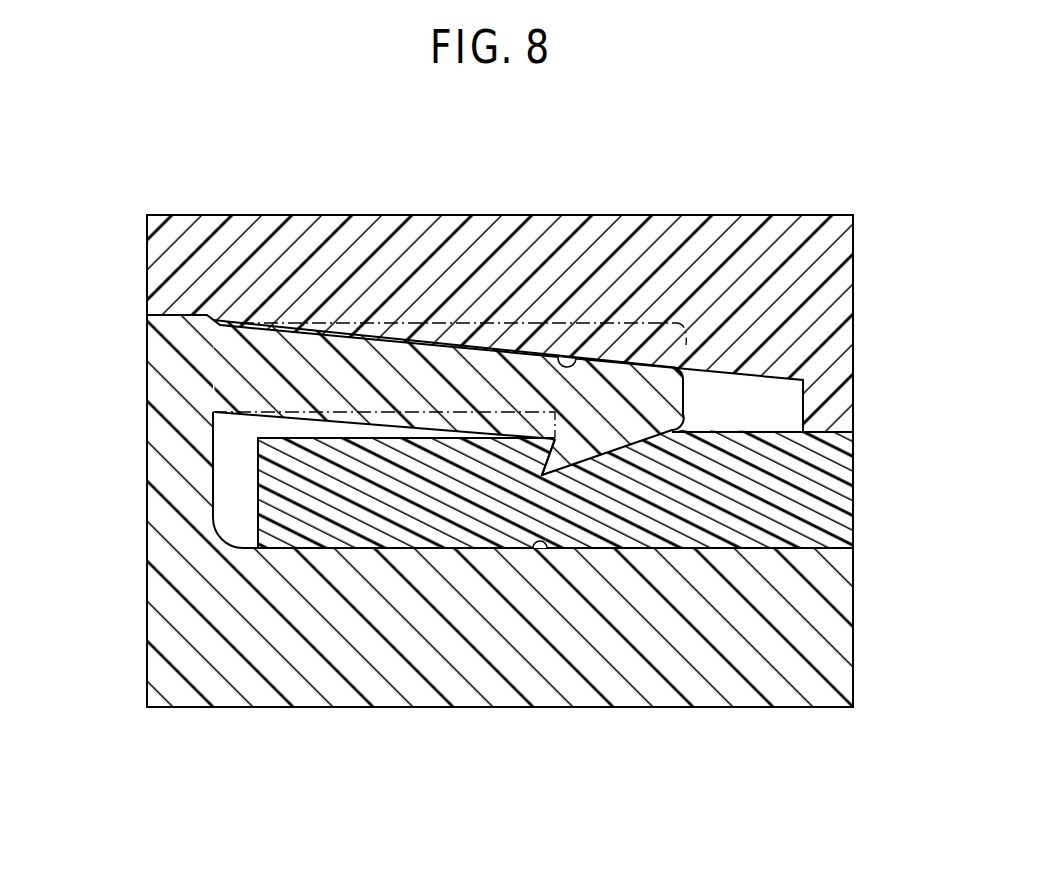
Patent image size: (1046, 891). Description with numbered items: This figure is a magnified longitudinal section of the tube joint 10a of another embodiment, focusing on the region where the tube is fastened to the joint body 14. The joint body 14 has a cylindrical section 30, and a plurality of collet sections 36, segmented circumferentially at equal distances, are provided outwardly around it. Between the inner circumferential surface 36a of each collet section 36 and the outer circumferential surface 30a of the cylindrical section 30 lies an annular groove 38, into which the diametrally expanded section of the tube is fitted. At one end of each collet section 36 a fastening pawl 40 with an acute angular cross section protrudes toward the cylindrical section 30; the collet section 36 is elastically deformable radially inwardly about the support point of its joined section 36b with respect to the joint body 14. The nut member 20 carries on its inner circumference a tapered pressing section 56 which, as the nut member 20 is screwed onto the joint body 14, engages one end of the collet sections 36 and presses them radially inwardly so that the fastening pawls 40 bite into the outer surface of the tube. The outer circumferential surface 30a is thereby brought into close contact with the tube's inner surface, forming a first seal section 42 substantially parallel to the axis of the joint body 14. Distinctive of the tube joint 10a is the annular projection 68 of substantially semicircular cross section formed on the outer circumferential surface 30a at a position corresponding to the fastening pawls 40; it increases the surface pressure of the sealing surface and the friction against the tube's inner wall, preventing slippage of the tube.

The tube joint 10a is at (776, 143).
The joint body 14 is at (140, 670).
The nut member 20 is at (864, 294).
The cylindrical section 30 is at (812, 645).
The outer circumferential surface 30a is at (727, 533).
The collet section 36 is at (460, 383).
The inner circumferential surface 36a is at (380, 420).
The joined section 36b is at (248, 375).
The annular groove 38 is at (218, 500).
The fastening pawl 40 is at (553, 440).
The first seal section 42 is at (525, 557).
The pressing section 56 is at (567, 357).
The projection 68 is at (542, 473).